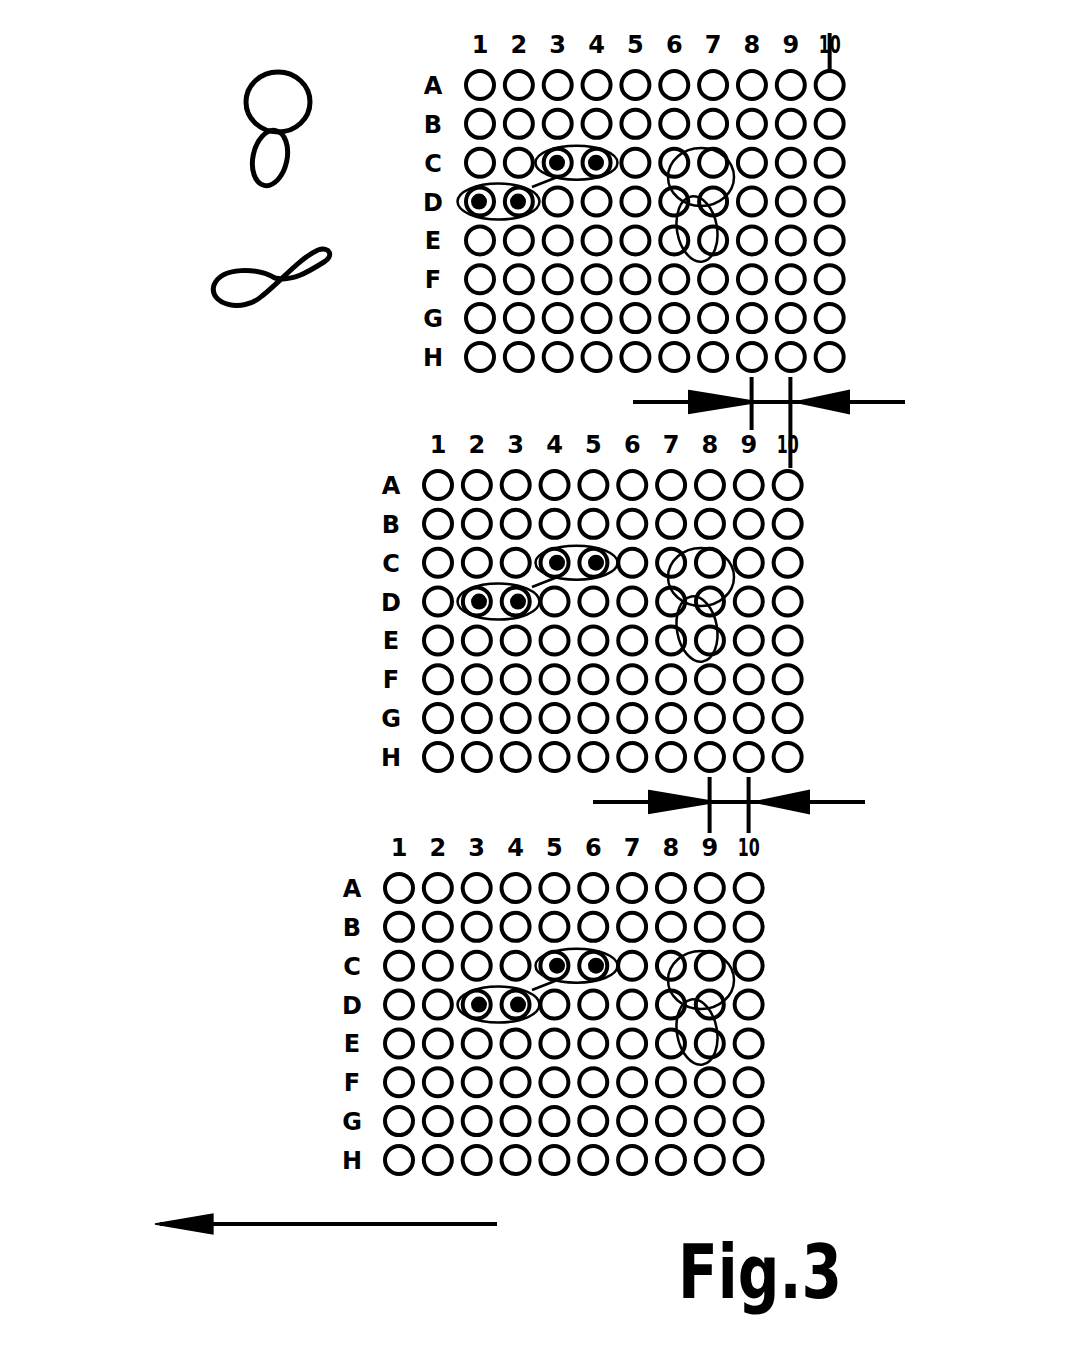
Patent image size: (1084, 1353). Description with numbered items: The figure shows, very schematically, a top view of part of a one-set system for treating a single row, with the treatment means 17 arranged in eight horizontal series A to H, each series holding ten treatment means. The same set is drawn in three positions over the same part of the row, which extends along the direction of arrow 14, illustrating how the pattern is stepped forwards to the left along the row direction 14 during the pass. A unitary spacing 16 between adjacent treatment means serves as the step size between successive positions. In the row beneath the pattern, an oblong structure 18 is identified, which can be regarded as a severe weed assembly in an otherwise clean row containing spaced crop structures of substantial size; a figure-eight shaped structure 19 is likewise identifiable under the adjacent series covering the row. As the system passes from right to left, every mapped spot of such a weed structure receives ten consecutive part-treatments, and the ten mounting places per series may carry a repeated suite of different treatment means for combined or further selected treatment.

The arrow 14 is at (270, 1218).
The unitary spacing 16 is at (765, 404).
The treatment means 17 is at (466, 72).
The oblong structure 18 is at (242, 308).
The digit-8 formed structure 19 is at (250, 163).